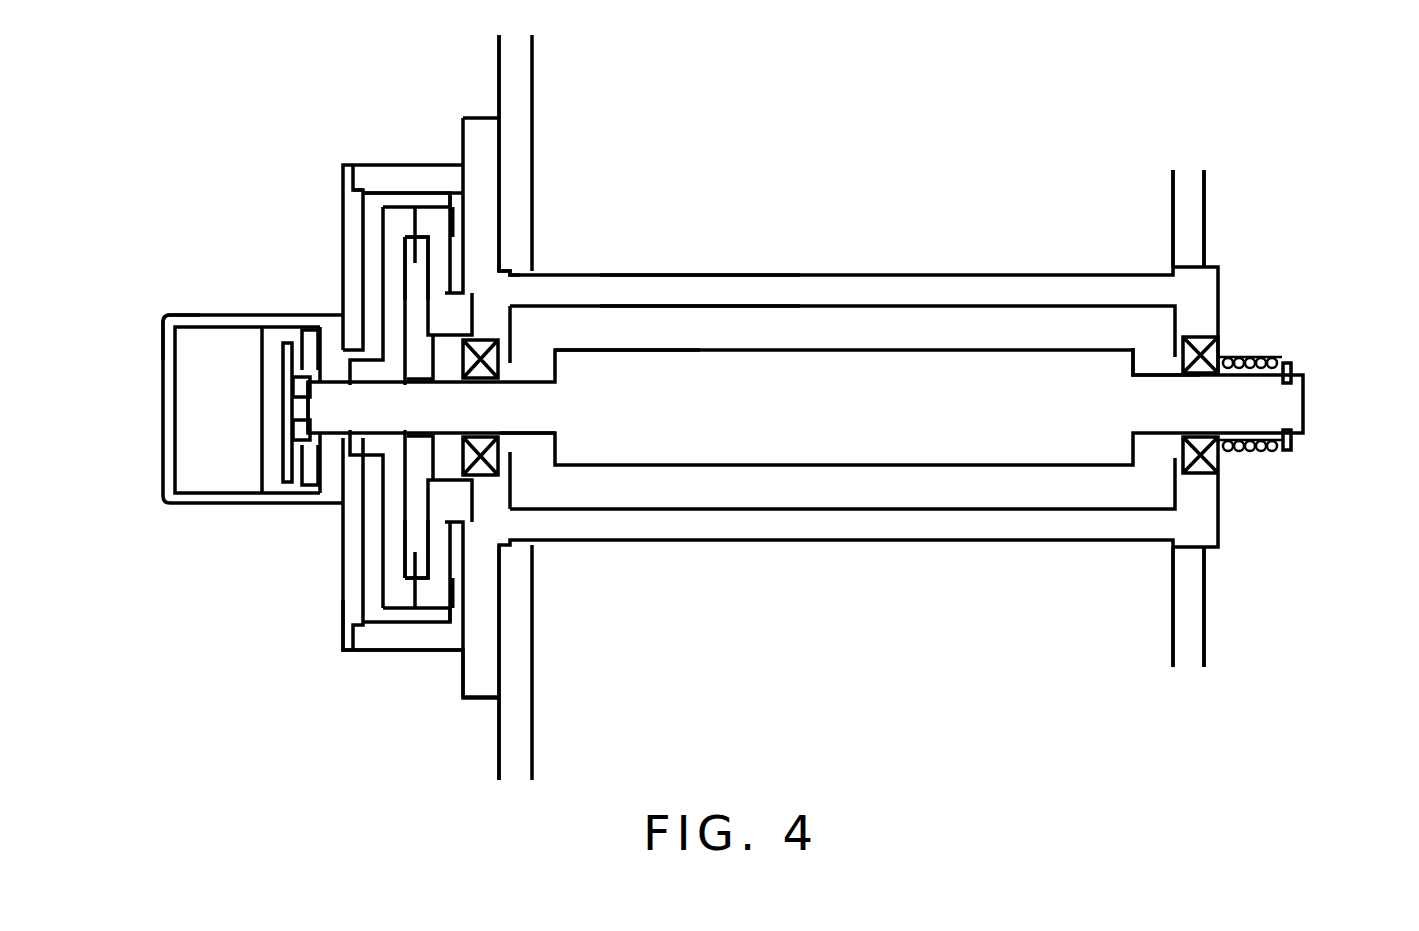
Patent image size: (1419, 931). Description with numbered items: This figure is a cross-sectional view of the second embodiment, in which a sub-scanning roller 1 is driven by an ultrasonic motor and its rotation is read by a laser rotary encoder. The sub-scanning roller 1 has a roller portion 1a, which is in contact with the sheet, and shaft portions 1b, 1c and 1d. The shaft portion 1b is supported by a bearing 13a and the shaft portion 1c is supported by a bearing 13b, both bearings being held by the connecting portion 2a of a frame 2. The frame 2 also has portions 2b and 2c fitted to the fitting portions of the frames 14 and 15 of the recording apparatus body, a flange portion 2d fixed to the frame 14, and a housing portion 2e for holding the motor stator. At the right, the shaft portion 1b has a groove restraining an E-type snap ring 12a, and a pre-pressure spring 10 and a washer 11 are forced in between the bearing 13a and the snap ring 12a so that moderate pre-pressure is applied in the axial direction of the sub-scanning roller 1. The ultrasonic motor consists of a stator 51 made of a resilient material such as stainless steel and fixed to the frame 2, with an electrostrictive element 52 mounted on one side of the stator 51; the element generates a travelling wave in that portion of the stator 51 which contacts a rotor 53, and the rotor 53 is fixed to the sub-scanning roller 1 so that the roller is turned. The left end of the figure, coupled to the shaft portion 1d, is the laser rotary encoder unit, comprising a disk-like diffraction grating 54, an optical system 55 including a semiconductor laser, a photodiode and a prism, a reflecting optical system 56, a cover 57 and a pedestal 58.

The sub-scanning roller 1 is at (852, 352).
The roller portion 1a is at (615, 372).
The shaft portion 1b is at (1152, 390).
The shaft portion 1c is at (527, 420).
The shaft portion 1d is at (318, 432).
The frame 2 is at (791, 264).
The connecting portion 2a is at (718, 275).
The portion fitted to frame 2b is at (1218, 267).
The portion fitted to frame 2c is at (502, 265).
The flange portion 2d is at (463, 130).
The housing portion 2e is at (432, 218).
The pre-pressure spring 10 is at (1247, 460).
The washer 11 is at (1284, 453).
The E-type snap ring 12a is at (1292, 443).
The bearing 13a is at (1207, 477).
The bearing 13b is at (463, 460).
The frame of recording apparatus body 14 is at (530, 88).
The frame of recording apparatus body 15 is at (1197, 195).
The stator 51 is at (360, 168).
The electrostrictive element 52 is at (423, 175).
The rotor 53 is at (395, 260).
The disk-like diffraction grating 54 is at (285, 422).
The optical system 55 is at (193, 380).
The reflecting optical system 56 is at (313, 328).
The cover 57 is at (163, 340).
The pedestal 58 is at (353, 602).